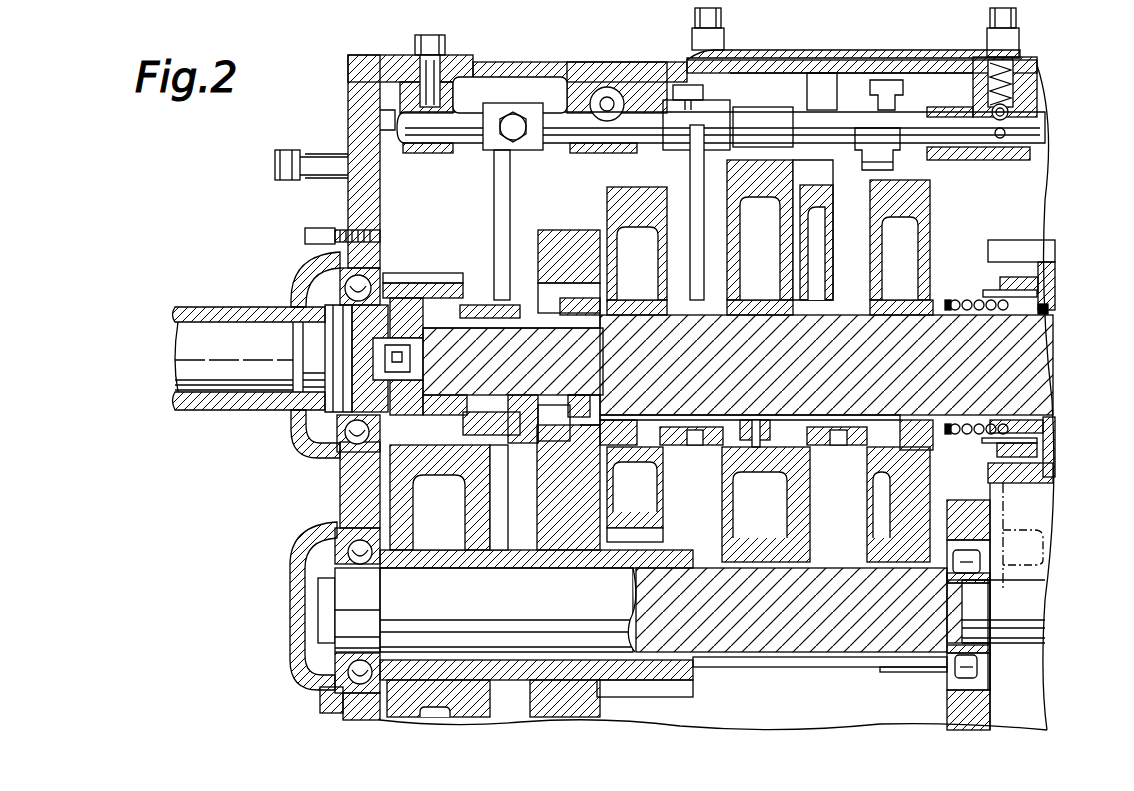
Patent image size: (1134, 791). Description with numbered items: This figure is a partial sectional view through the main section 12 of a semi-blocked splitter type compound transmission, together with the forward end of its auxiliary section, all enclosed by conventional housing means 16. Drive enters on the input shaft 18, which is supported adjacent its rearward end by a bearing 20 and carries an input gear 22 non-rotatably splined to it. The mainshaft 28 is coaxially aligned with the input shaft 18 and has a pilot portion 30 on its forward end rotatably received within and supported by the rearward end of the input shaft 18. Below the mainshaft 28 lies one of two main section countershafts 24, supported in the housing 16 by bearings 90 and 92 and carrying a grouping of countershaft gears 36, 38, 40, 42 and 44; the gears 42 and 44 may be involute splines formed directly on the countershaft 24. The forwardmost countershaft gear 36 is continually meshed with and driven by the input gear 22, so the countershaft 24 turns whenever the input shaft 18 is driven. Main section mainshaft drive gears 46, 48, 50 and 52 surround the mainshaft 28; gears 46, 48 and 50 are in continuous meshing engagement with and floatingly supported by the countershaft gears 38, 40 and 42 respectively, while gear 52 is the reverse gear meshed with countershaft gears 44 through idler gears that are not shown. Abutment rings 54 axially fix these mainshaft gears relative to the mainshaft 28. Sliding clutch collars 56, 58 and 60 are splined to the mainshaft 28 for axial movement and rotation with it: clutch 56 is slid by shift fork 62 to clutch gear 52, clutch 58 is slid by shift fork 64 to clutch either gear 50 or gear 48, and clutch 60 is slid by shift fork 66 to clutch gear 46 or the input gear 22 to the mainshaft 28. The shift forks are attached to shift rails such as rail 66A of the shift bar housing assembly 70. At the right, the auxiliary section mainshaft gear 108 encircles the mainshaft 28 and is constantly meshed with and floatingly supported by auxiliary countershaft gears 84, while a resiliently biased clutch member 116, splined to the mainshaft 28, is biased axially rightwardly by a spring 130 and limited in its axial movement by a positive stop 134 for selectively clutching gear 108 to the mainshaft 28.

The main section 12 is at (548, 45).
The housing means 16 is at (343, 199).
The input shaft 18 is at (204, 383).
The bearing 20 is at (320, 455).
The input gear 22 is at (414, 284).
The main section countershaft 24 is at (545, 603).
The mainshaft 28 is at (686, 369).
The pilot portion 30 is at (455, 341).
The countershaft gear 36 is at (462, 503).
The countershaft gear 38 is at (553, 535).
The countershaft gear 40 is at (623, 692).
The countershaft gear 42 is at (728, 662).
The countershaft gear 44 is at (917, 665).
The main section mainshaft drive gear 46 is at (565, 237).
The main section mainshaft drive gear 48 is at (622, 195).
The main section mainshaft drive gear 50 is at (763, 183).
The reverse gear 52 is at (917, 203).
The abutment ring 54 is at (578, 397).
The sliding clutch collar 56 is at (817, 445).
The sliding clutch collar 58 is at (673, 432).
The sliding clutch collar 60 is at (527, 413).
The shift fork 62 is at (840, 250).
The shift fork 64 is at (693, 175).
The shift fork 66 is at (493, 207).
The shift rail 66A is at (467, 141).
The shift bar housing assembly 70 is at (878, 50).
The auxiliary section countershaft gear 84 is at (1037, 515).
The bearing 90 is at (350, 550).
The bearing 92 is at (990, 667).
The auxiliary section mainshaft gear 108 is at (1043, 250).
The resiliently biased clutch member 116 is at (988, 441).
The spring 130 is at (970, 300).
The positive stop 134 is at (1050, 320).